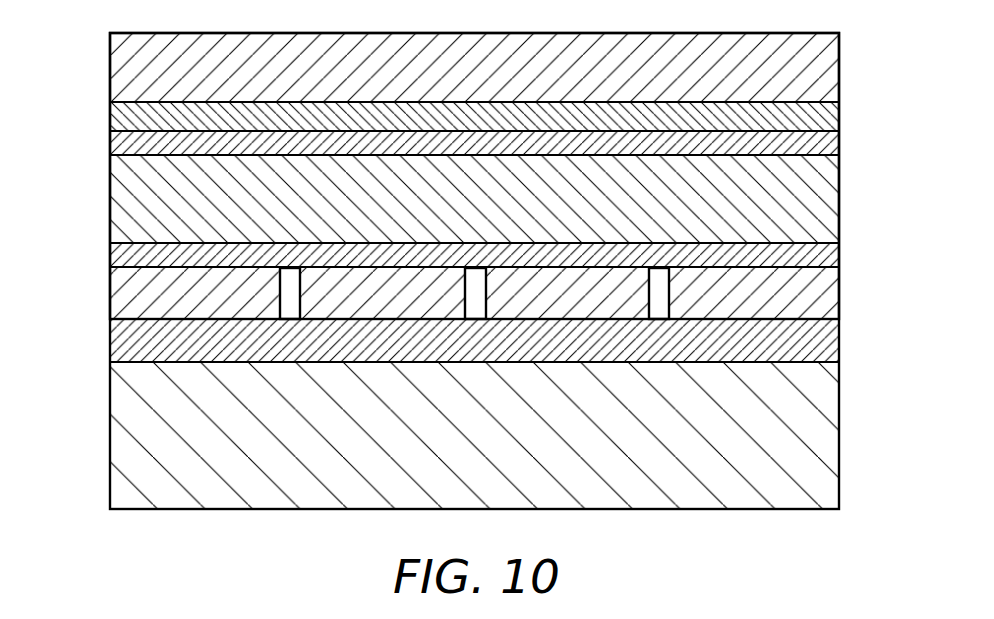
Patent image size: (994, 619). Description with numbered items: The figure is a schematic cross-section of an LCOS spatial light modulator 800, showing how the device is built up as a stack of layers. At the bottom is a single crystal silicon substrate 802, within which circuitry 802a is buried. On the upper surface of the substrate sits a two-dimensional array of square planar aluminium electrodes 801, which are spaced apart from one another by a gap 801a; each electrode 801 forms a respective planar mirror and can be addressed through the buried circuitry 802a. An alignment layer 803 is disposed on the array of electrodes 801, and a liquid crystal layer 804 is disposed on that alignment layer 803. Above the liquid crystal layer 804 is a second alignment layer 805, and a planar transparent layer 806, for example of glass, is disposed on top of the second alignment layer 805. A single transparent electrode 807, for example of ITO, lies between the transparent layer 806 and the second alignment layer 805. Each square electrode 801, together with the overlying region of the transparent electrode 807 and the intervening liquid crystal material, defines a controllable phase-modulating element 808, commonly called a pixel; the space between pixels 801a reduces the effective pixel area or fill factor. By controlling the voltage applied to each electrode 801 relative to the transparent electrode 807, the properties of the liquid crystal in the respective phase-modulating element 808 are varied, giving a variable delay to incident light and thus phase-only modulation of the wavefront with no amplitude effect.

The layered device structure 800 is at (779, 534).
The square planar aluminium electrodes 801 is at (842, 288).
The gap 801a is at (660, 298).
The single crystal silicon substrate 802 is at (110, 430).
The circuitry 802a is at (110, 338).
The alignment layer 803 is at (842, 250).
The liquid crystal layer 804 is at (842, 193).
The second alignment layer 805 is at (842, 138).
The planar transparent layer 806 is at (842, 63).
The transparent electrode 807 is at (842, 112).
The controllable phase-modulating element 808 is at (98, 34).